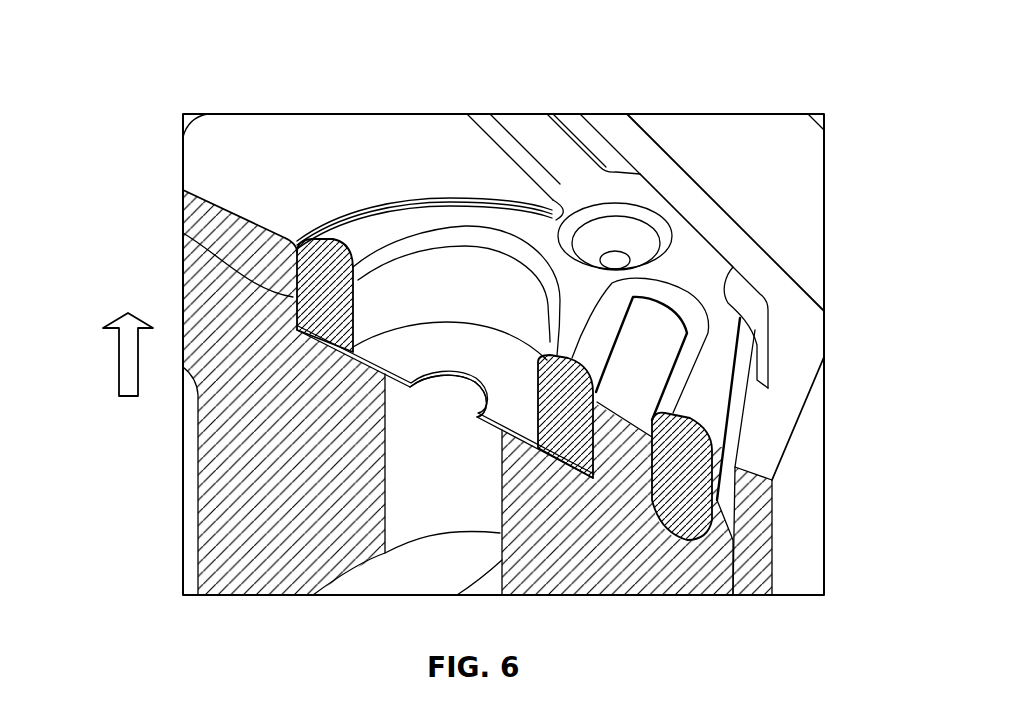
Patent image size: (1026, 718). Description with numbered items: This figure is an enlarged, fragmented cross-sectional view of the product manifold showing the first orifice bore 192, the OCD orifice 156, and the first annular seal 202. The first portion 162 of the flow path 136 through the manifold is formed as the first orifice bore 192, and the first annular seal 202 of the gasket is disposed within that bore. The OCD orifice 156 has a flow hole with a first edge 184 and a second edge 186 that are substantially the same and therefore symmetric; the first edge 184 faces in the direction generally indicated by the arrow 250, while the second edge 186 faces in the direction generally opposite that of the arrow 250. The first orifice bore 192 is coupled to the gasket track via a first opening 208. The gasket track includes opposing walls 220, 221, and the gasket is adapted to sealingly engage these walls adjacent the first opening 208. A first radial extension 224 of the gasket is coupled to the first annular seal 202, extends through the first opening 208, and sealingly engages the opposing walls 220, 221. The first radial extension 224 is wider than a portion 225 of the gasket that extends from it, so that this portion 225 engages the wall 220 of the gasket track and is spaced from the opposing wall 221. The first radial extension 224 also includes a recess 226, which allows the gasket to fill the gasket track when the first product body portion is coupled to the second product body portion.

The flow path 136 is at (503, 514).
The OCD orifice 156 is at (413, 341).
The first portion of the flow path 162 is at (502, 437).
The first edge 184 is at (477, 383).
The second edge 186 is at (475, 390).
The first orifice bore 192 is at (183, 233).
The first annular seal 202 is at (347, 234).
The first opening 208 is at (530, 203).
The wall 220 is at (503, 133).
The opposing wall 221 is at (600, 137).
The first radial extension 224 is at (685, 260).
The portion of the gasket 225 is at (507, 130).
The recess 226 is at (645, 218).
The arrow 250 is at (125, 368).